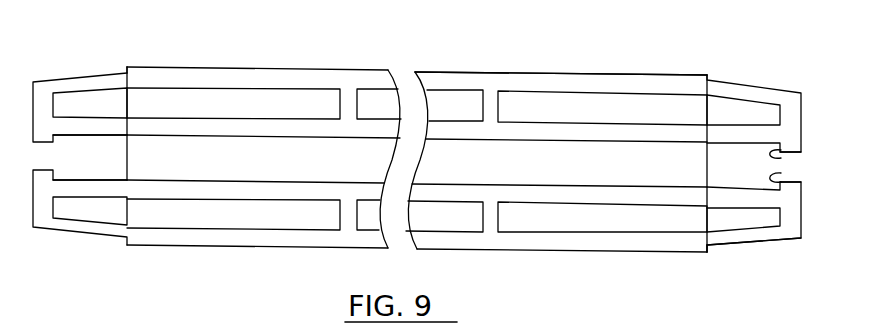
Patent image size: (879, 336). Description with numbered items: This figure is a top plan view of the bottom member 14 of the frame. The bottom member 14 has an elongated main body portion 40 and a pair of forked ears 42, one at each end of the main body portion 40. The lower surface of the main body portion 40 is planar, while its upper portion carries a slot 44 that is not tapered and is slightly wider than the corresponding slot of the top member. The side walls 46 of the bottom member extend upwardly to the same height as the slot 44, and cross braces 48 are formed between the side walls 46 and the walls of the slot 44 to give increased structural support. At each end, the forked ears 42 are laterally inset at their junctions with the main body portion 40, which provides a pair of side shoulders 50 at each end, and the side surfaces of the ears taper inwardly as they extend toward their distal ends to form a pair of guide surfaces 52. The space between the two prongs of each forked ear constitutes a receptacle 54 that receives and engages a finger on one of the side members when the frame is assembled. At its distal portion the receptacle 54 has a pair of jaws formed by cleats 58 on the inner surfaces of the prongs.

The bottom member 14 is at (446, 163).
The main body portion 40 is at (593, 73).
The forked ears 42 is at (97, 76).
The slot 44 is at (243, 162).
The side walls 46 is at (438, 72).
The cross braces 48 is at (498, 102).
The side shoulders 50 is at (712, 251).
The guide surfaces 52 is at (772, 242).
The receptacle 54 is at (795, 167).
The cleats 58 is at (781, 158).